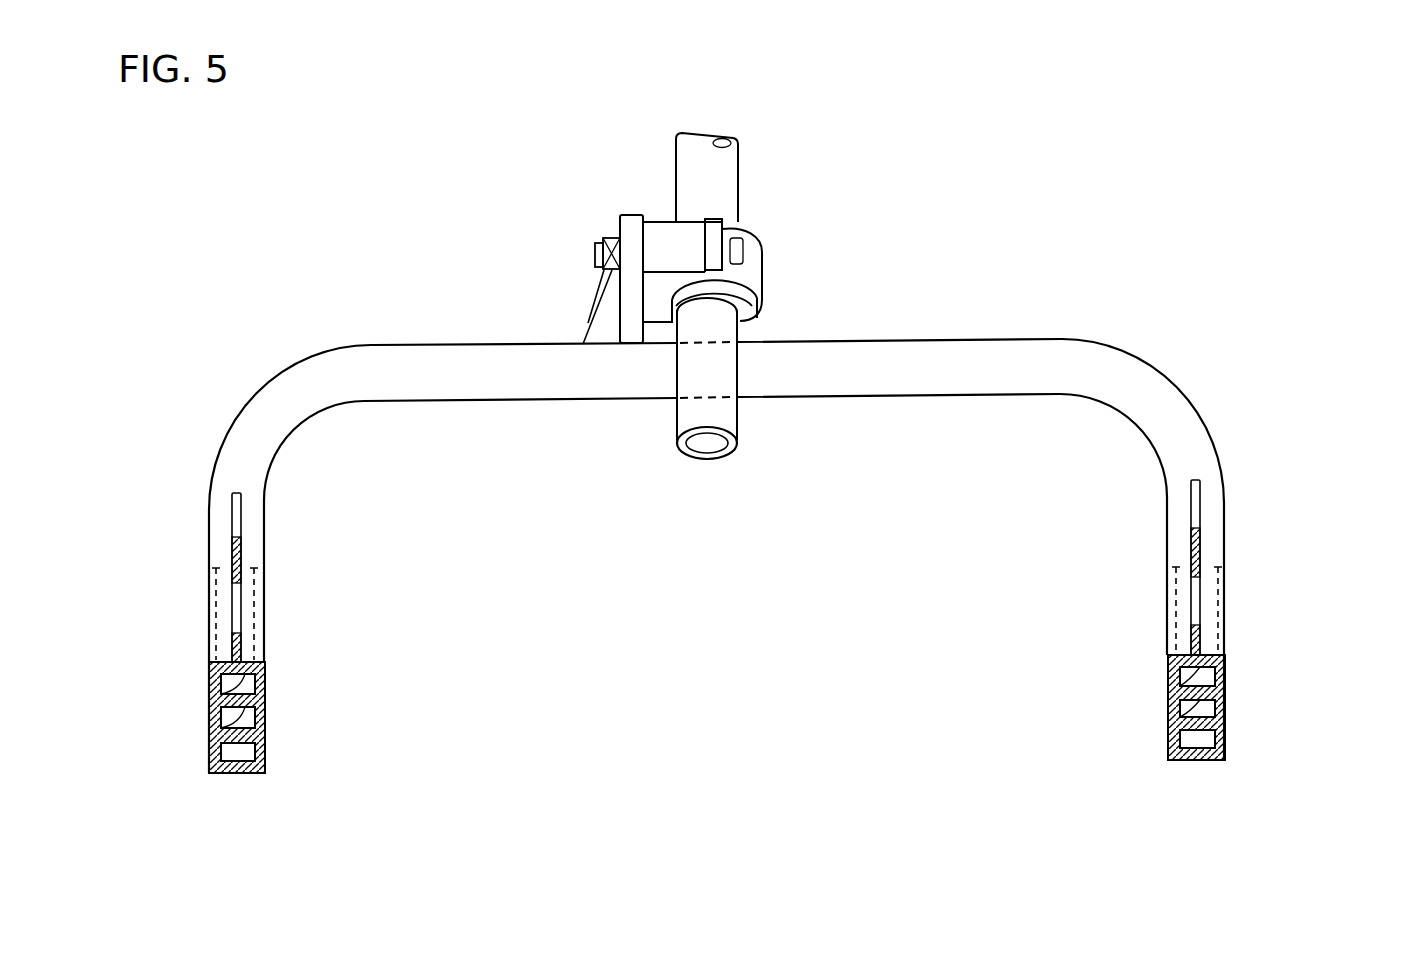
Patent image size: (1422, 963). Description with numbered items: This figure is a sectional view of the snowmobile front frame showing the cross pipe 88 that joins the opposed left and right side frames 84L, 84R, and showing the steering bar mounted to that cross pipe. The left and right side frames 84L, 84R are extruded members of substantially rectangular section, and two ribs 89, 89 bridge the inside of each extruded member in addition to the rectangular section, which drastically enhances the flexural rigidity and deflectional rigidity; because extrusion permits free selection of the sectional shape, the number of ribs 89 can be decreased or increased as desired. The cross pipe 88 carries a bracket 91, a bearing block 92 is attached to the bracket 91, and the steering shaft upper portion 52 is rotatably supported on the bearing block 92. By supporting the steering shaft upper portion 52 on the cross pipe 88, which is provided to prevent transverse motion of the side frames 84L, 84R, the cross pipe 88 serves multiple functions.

The steering shaft upper portion 52 is at (715, 185).
The cross pipe 88 is at (940, 362).
The bracket 91 is at (632, 232).
The bearing block 92 is at (760, 264).
The ribs 89 is at (265, 705).
The left side frame 84L is at (210, 728).
The right side frame 84R is at (1228, 708).